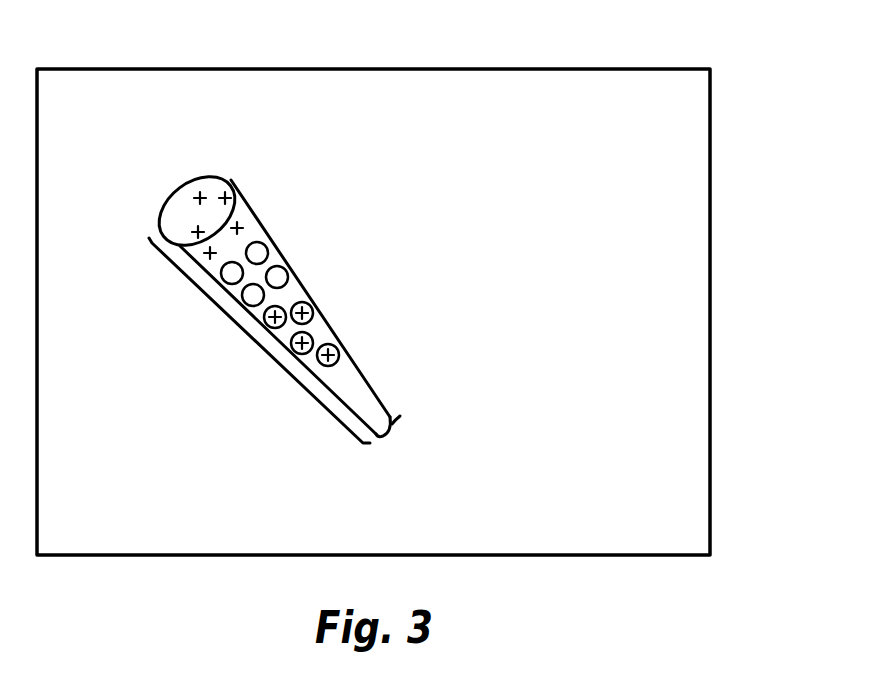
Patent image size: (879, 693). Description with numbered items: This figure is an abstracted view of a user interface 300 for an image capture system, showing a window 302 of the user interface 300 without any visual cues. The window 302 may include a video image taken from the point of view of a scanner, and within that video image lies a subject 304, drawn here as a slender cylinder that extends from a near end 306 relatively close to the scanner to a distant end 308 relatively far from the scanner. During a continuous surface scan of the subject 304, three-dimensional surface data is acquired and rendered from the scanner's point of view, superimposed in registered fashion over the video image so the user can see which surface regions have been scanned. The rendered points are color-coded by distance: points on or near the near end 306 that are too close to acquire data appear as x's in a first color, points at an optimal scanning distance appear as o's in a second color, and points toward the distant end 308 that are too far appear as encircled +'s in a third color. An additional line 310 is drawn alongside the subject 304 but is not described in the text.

The user interface 300 is at (738, 98).
The window 302 is at (712, 221).
The subject 304 is at (397, 270).
The near end 306 is at (232, 185).
The distant end 308 is at (392, 418).
The reference line 310 is at (253, 341).